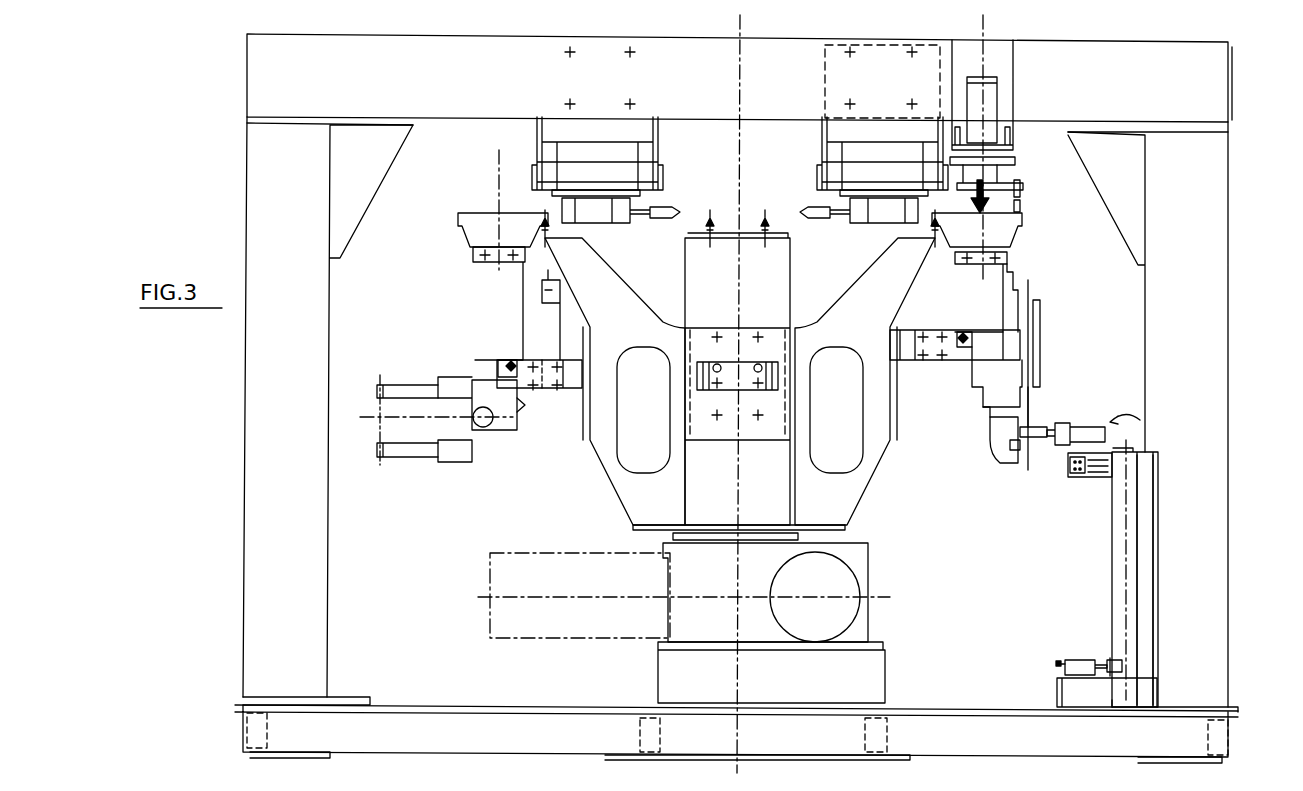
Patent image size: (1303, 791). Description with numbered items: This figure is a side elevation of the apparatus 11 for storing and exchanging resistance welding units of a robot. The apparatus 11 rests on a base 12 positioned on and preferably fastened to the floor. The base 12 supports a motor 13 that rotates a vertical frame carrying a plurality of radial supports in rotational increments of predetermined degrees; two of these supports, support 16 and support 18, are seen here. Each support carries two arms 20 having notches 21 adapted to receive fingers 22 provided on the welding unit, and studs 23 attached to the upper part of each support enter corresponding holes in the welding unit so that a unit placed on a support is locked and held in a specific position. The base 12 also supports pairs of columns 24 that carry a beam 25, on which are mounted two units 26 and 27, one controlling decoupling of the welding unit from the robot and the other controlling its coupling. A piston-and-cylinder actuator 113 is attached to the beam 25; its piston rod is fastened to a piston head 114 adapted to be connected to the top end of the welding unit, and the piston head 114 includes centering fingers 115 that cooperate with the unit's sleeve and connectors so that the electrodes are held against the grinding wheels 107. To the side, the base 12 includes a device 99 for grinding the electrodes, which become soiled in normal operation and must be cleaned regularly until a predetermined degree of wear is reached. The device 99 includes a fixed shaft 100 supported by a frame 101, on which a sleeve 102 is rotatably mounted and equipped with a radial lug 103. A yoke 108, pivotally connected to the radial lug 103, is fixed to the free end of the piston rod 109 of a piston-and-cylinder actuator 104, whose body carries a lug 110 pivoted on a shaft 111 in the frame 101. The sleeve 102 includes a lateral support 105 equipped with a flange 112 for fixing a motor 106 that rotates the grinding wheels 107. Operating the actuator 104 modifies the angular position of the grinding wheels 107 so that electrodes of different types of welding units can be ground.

The apparatus 11 is at (886, 622).
The base 12 is at (912, 706).
The motor 13 is at (848, 586).
The support 16 is at (862, 460).
The support 18 is at (618, 477).
The arms 20 is at (547, 390).
The notches 21 is at (478, 432).
The fingers 22 is at (511, 362).
The studs 23 is at (765, 222).
The columns 24 is at (313, 632).
The beam 25 is at (737, 96).
The unit 26 is at (598, 150).
The unit 27 is at (880, 160).
The device for grinding the electrodes 99 is at (1150, 634).
The fixed shaft 100 is at (1135, 452).
The frame 101 is at (1158, 487).
The sleeve 102 is at (1128, 555).
The radial lug 103 is at (1122, 665).
The piston-and-cylinder actuator 104 is at (1080, 660).
The lateral support 105 is at (1094, 470).
The motor 106 is at (1096, 428).
The grinding wheels 107 is at (1033, 428).
The yoke 108 is at (1110, 672).
The piston rod 109 is at (1105, 658).
The lug 110 is at (1056, 665).
The shaft 111 is at (1059, 662).
The flange 112 is at (1062, 444).
The piston-and-cylinder actuator 113 is at (1000, 113).
The piston head 114 is at (1018, 183).
The centering fingers 115 is at (1020, 207).